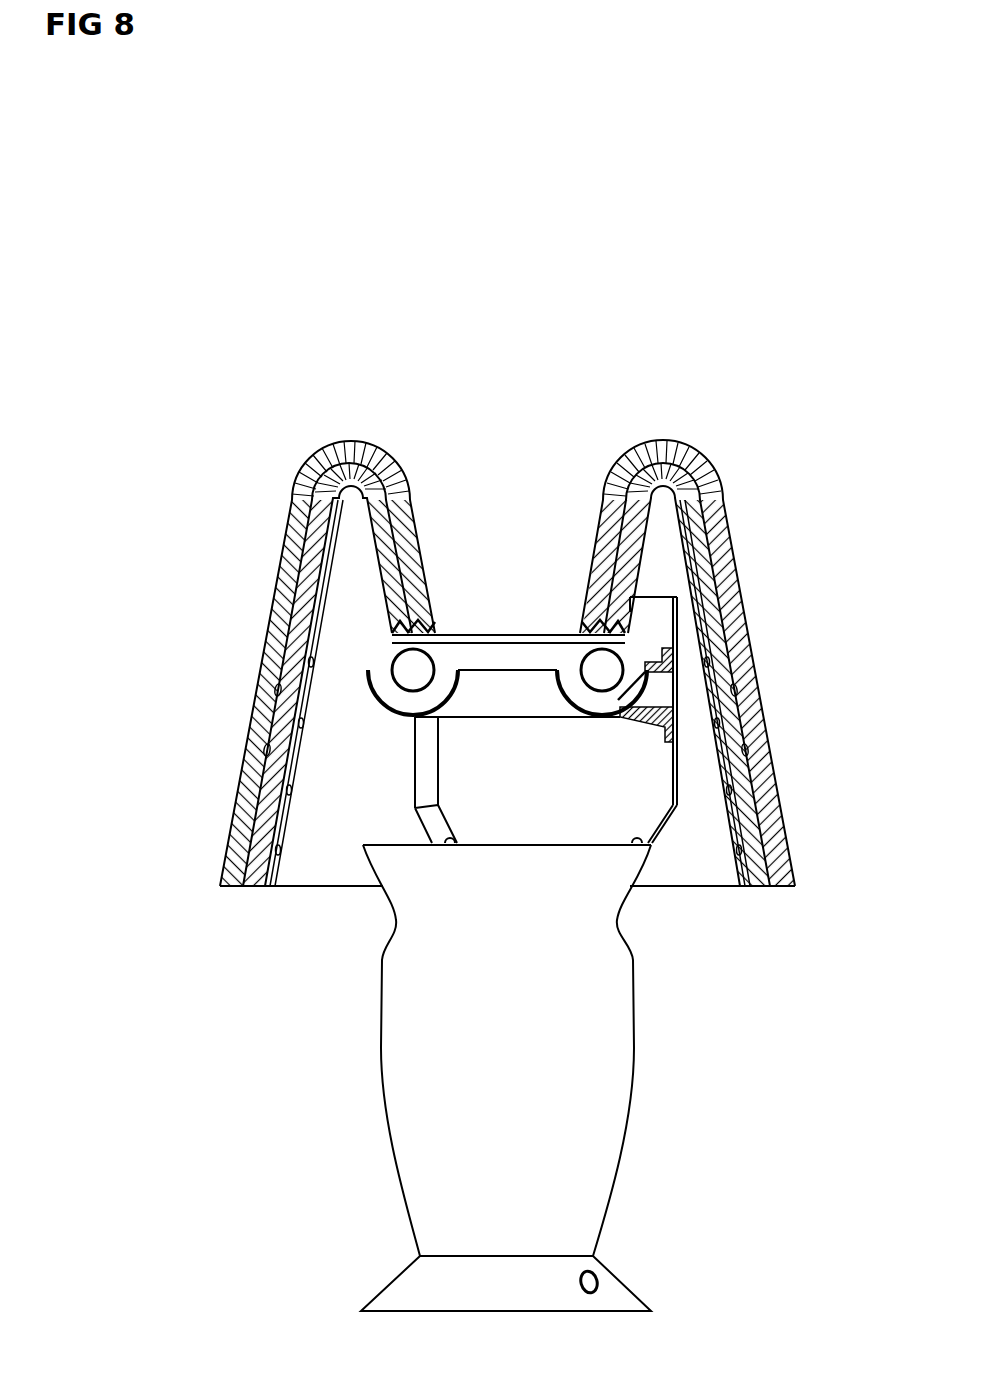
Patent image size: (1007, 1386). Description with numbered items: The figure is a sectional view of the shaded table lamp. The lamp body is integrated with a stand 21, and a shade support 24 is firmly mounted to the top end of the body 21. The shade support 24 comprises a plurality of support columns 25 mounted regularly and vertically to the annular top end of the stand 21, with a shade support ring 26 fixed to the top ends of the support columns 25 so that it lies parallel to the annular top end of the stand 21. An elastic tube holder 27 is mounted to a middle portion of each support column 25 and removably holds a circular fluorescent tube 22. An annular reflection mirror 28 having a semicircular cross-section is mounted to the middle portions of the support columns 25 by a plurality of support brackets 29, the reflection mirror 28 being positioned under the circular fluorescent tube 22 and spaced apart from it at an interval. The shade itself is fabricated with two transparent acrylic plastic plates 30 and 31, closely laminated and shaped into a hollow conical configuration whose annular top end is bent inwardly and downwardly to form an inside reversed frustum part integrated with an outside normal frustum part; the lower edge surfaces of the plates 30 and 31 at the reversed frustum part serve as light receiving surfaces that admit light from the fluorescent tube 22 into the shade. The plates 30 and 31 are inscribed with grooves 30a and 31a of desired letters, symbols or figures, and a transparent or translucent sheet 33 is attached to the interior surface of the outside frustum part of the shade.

The stand 21 is at (601, 1106).
The circular fluorescent tube 22 is at (400, 661).
The shade support 24 is at (660, 830).
The support column 25 is at (675, 773).
The shade support ring 26 is at (657, 597).
The tube holder 27 is at (673, 663).
The reflection mirror 28 is at (372, 676).
The support bracket 29 is at (675, 717).
The transparent acrylic plastic plate 30 is at (235, 852).
The groove 30a is at (270, 686).
The transparent acrylic plastic plate 31 is at (248, 878).
The groove 31a is at (288, 723).
The transparent or translucent sheet 33 is at (277, 852).